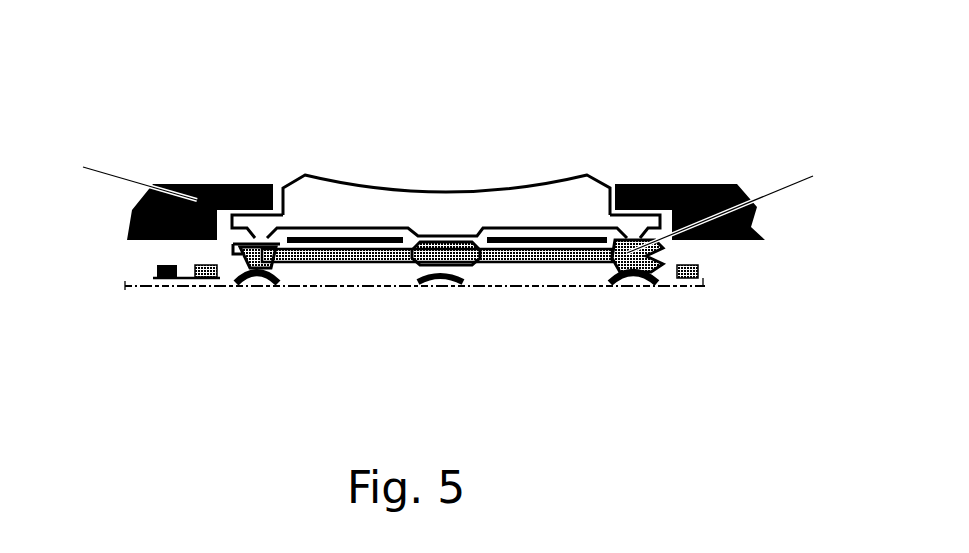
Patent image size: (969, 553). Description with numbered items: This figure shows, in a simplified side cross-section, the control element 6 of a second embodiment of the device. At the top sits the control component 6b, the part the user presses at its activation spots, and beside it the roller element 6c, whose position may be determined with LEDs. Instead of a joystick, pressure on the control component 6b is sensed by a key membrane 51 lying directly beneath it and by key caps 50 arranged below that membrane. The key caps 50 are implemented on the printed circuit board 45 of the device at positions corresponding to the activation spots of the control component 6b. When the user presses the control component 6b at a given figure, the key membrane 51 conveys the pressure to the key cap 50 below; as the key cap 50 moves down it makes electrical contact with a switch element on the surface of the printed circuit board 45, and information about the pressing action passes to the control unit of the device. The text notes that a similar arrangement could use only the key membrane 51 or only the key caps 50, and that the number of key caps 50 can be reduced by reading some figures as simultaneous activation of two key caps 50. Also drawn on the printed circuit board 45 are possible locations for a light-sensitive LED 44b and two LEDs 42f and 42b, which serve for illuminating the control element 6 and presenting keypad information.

The control element 6 is at (206, 141).
The control component 6b is at (307, 185).
The roller element 6c is at (197, 200).
The light-sensitive LED 44b is at (158, 265).
The LED 42f is at (203, 267).
The LED 42b is at (699, 270).
The printed circuit board 45 is at (704, 282).
The key cap 50 is at (627, 273).
The key membrane 51 is at (627, 253).